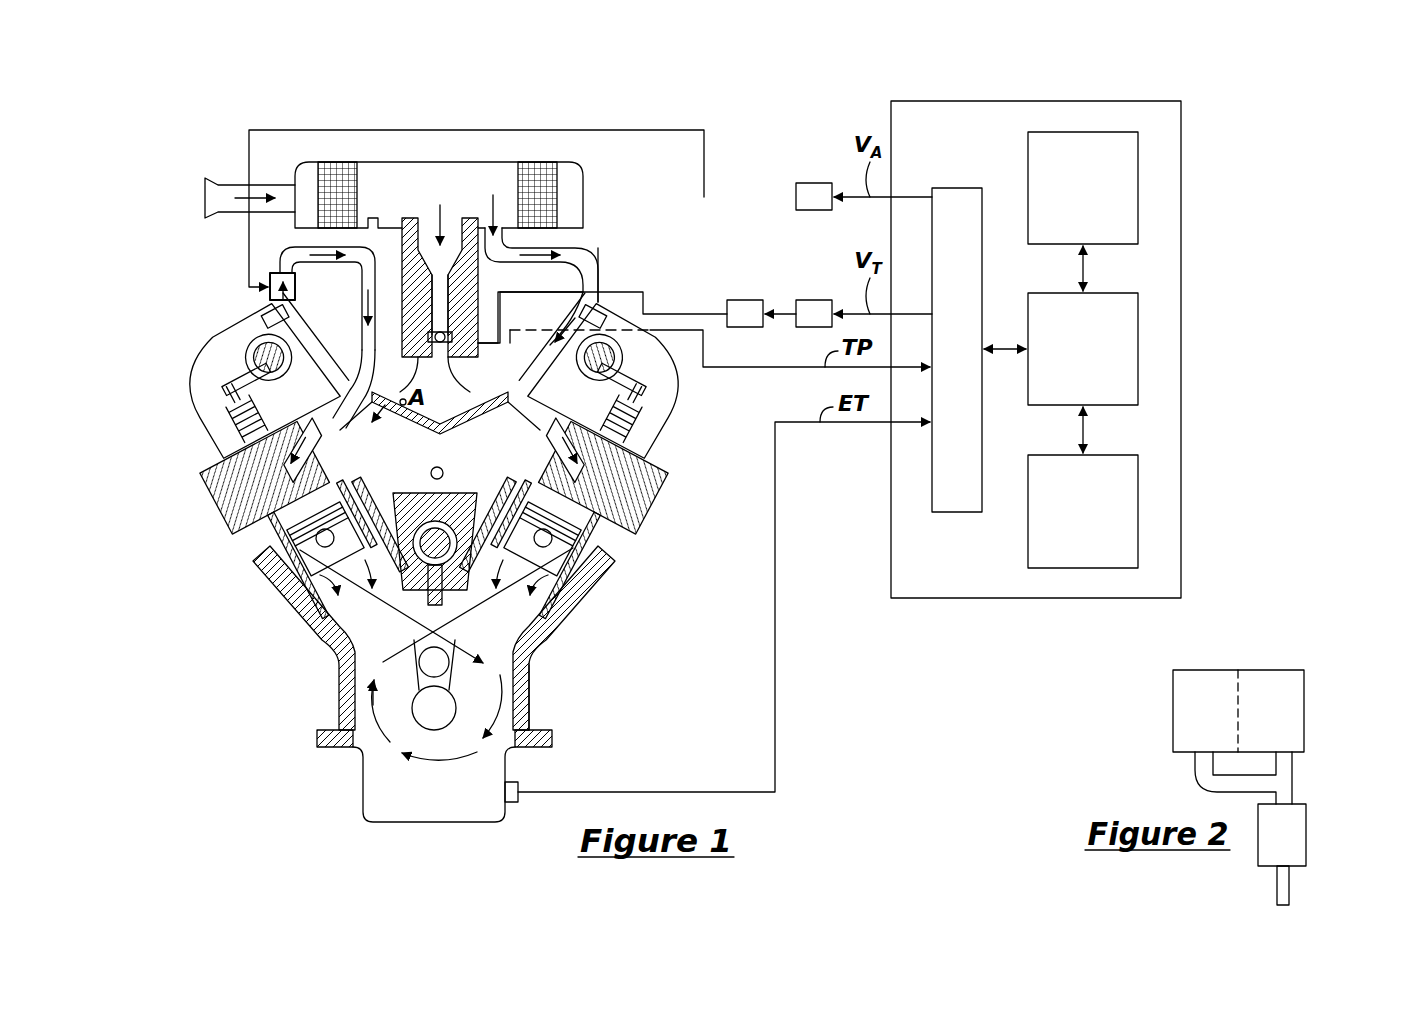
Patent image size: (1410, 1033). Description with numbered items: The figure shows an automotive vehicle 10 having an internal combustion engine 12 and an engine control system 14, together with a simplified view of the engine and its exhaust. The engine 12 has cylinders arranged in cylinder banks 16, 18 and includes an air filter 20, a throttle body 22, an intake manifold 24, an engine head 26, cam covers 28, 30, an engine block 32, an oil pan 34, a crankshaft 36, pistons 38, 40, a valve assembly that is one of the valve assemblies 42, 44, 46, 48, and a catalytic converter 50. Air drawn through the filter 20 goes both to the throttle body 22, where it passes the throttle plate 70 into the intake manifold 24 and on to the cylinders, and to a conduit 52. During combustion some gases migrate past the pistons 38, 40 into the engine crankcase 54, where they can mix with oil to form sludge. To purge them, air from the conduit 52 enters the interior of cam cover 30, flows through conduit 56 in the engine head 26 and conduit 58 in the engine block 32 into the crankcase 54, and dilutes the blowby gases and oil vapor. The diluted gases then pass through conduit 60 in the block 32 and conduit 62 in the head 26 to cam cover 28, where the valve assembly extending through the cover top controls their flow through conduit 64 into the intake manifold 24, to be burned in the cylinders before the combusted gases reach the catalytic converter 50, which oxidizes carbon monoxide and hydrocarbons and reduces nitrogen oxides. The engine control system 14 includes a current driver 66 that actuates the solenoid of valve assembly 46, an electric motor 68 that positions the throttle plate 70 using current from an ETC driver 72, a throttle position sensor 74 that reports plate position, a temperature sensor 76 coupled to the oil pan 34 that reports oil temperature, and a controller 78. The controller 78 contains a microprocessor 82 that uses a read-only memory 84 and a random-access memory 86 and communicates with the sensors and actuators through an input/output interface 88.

In FIG. 1, the automotive vehicle 10 is at (752, 110).
In FIG. 1, the internal combustion engine 12 is at (606, 235).
In FIG. 1, the engine control system 14 is at (1183, 101).
In FIG. 2, the cylinder bank 16 is at (1173, 710).
In FIG. 2, the cylinder bank 18 is at (1304, 710).
In FIG. 1, the air filter 20 is at (330, 165).
In FIG. 1, the throttle body 22 is at (462, 240).
In FIG. 1, the intake manifold 24 is at (455, 402).
In FIG. 1, the engine head 26 is at (660, 512).
In FIG. 1, the cam cover 28 is at (212, 375).
In FIG. 1, the cam cover 30 is at (678, 388).
In FIG. 1, the engine block 32 is at (577, 632).
In FIG. 1, the oil pan 34 is at (363, 803).
In FIG. 1, the crankshaft 36 is at (434, 720).
In FIG. 1, the piston 38 is at (268, 590).
In FIG. 1, the piston 40 is at (600, 583).
In FIG. 1, the valve assembly 42 is at (275, 300).
In FIG. 1, the valve assembly 44 is at (191, 285).
In FIG. 1, the valve assembly 46 is at (191, 285).
In FIG. 1, the valve assembly 48 is at (191, 285).
In FIG. 2, the catalytic converter 50 is at (1306, 836).
In FIG. 1, the conduit 52 is at (600, 270).
In FIG. 1, the engine crankcase 54 is at (494, 705).
In FIG. 1, the conduit 56 is at (520, 430).
In FIG. 1, the conduit 58 is at (432, 468).
In FIG. 1, the conduit 60 is at (391, 440).
In FIG. 1, the conduit 62 is at (330, 388).
In FIG. 1, the conduit 64 is at (320, 273).
In FIG. 1, the current driver 66 is at (813, 183).
In FIG. 1, the electric motor 68 is at (745, 300).
In FIG. 1, the throttle plate 70 is at (440, 326).
In FIG. 1, the ETC driver 72 is at (815, 300).
In FIG. 1, the throttle position sensor 74 is at (470, 344).
In FIG. 1, the temperature sensor 76 is at (512, 782).
In FIG. 1, the controller 78 is at (1181, 275).
In FIG. 1, the microprocessor 82 is at (1138, 348).
In FIG. 1, the read-only memory 84 is at (1138, 186).
In FIG. 1, the random-access memory 86 is at (1138, 508).
In FIG. 1, the input/output interface 88 is at (982, 430).